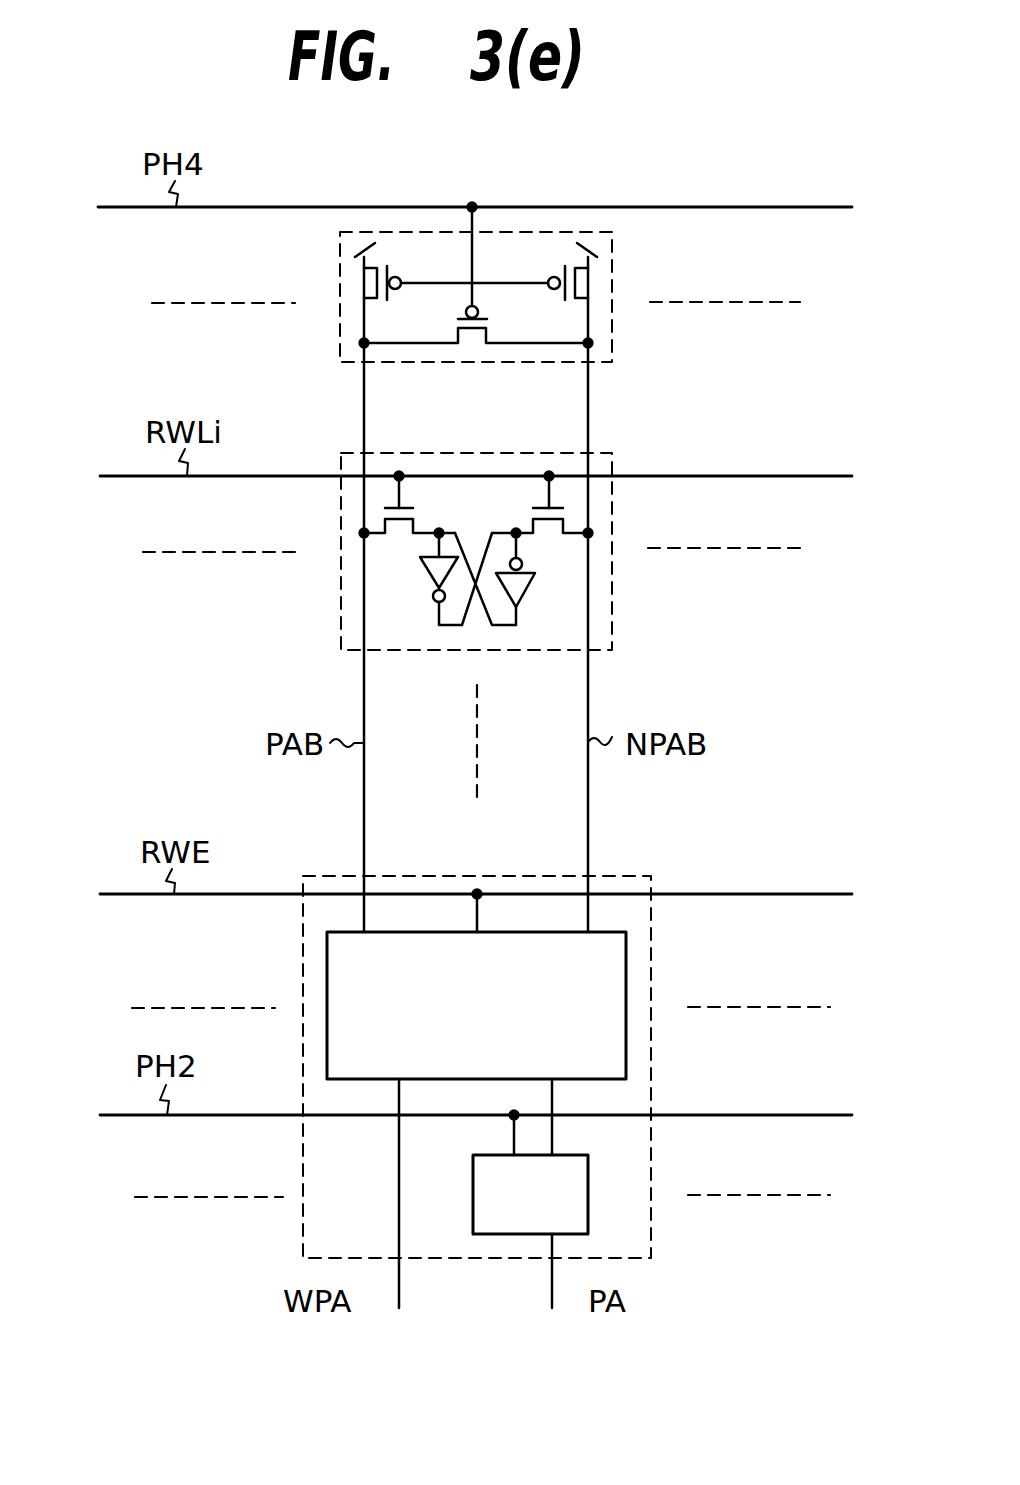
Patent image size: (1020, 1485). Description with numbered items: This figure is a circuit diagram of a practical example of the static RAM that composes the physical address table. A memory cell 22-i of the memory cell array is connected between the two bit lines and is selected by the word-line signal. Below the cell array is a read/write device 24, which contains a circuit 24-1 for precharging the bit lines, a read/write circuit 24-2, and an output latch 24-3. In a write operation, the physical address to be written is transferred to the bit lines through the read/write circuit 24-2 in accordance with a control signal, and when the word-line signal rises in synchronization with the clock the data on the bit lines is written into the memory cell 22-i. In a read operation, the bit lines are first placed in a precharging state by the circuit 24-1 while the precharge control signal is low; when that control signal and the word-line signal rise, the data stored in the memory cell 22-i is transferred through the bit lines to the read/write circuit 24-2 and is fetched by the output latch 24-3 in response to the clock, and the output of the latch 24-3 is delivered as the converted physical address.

The circuit for precharging a bit line 24-1 is at (612, 266).
The memory cell 22-i is at (612, 525).
The read/write device 24 is at (528, 1070).
The read/write circuit 24-2 is at (626, 953).
The output latch 24-3 is at (588, 1173).